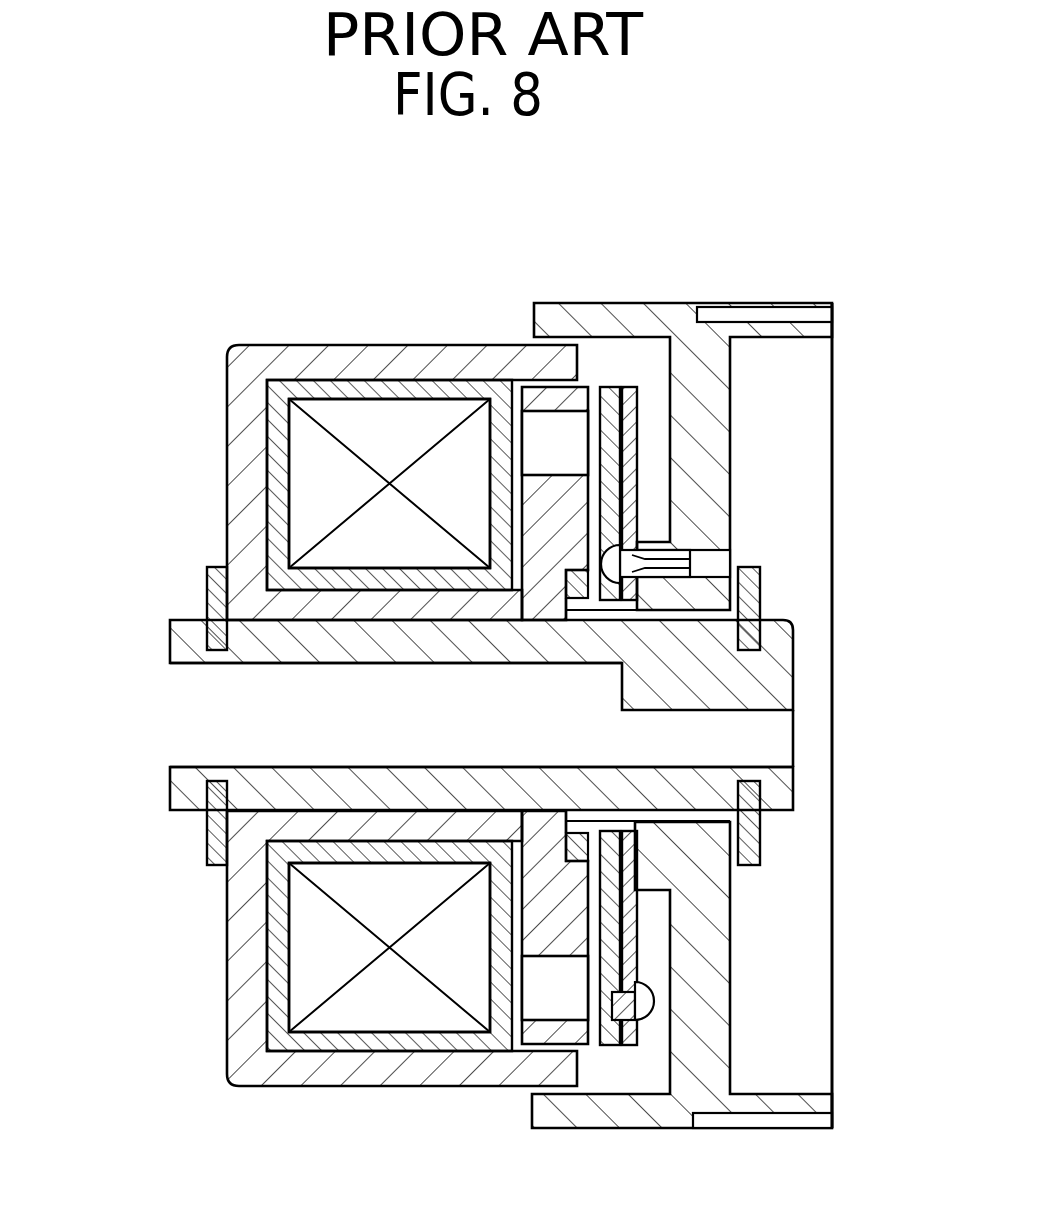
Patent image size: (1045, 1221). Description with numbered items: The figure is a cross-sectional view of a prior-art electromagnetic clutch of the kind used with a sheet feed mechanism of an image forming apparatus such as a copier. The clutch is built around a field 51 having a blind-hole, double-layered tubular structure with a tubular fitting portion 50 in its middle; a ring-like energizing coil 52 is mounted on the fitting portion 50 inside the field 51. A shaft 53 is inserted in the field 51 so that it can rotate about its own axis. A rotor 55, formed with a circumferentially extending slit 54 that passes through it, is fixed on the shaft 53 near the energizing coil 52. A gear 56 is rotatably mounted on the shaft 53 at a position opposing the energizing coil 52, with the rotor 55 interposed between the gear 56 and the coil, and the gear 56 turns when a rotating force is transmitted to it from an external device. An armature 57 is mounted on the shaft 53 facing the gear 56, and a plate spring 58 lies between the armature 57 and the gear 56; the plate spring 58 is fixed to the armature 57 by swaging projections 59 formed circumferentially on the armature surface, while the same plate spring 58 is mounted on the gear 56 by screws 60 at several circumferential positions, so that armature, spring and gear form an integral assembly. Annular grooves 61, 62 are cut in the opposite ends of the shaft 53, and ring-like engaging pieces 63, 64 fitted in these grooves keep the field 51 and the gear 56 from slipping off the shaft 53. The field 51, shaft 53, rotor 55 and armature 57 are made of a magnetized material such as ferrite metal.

The fitting portion 50 is at (327, 607).
The field 51 is at (397, 360).
The energizing coil 52 is at (340, 480).
The shaft 53 is at (263, 648).
The slit 54 is at (565, 441).
The rotor 55 is at (560, 380).
The gear 56 is at (700, 995).
The armature 57 is at (610, 422).
The plate spring 58 is at (615, 476).
The swaging projections 59 is at (641, 997).
The screws 60 is at (645, 548).
The annular groove 61 is at (238, 792).
The annular groove 62 is at (705, 817).
The engaging piece 63 is at (207, 830).
The engaging piece 64 is at (758, 842).